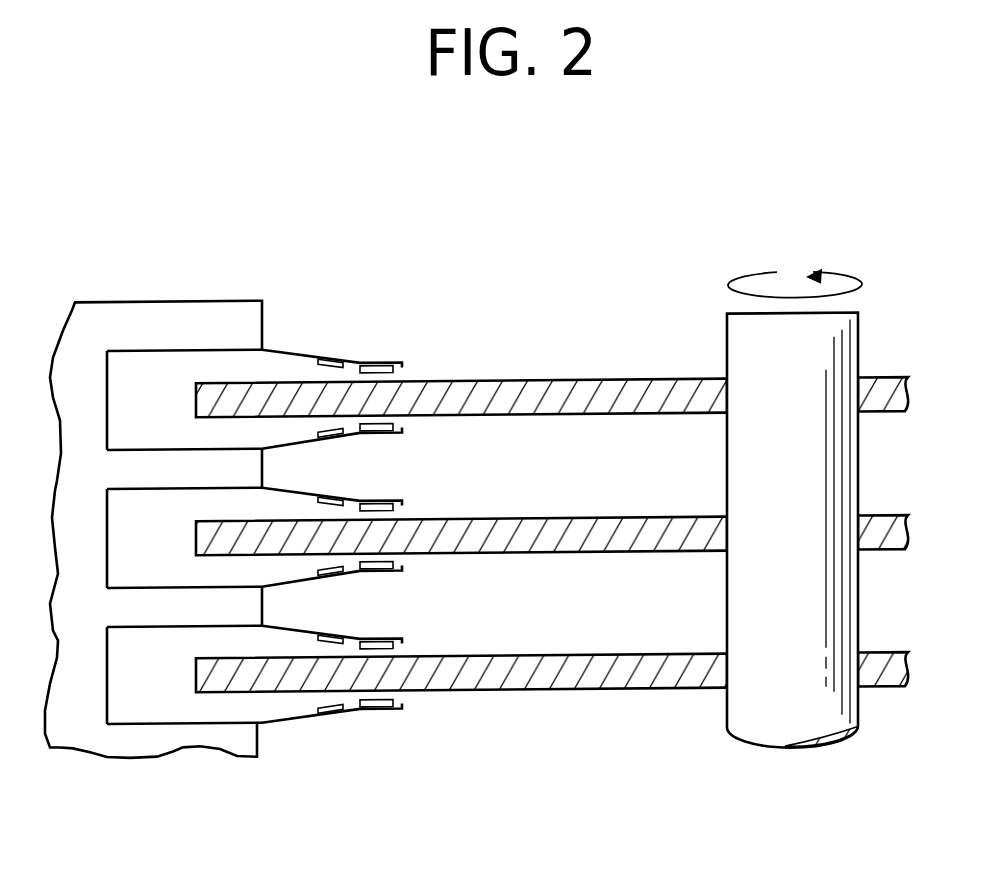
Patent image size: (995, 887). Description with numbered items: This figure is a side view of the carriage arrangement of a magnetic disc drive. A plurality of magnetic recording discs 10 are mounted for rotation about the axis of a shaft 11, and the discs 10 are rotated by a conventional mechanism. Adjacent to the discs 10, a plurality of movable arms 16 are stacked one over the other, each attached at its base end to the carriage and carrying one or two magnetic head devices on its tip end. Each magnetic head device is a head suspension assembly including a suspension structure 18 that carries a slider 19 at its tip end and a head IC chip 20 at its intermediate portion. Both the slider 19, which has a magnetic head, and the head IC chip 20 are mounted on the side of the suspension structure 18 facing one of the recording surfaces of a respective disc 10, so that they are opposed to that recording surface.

The movable arm 16 is at (173, 323).
The suspension structure 18 is at (287, 350).
The head IC chip 20 is at (332, 361).
The slider 19 is at (388, 363).
The magnetic recording disc 10 is at (599, 386).
The shaft 11 is at (760, 709).